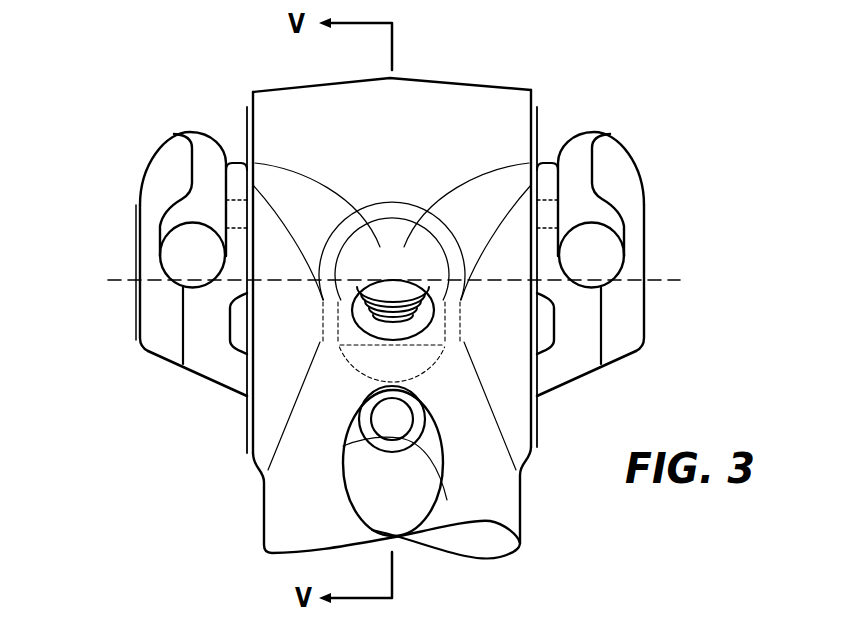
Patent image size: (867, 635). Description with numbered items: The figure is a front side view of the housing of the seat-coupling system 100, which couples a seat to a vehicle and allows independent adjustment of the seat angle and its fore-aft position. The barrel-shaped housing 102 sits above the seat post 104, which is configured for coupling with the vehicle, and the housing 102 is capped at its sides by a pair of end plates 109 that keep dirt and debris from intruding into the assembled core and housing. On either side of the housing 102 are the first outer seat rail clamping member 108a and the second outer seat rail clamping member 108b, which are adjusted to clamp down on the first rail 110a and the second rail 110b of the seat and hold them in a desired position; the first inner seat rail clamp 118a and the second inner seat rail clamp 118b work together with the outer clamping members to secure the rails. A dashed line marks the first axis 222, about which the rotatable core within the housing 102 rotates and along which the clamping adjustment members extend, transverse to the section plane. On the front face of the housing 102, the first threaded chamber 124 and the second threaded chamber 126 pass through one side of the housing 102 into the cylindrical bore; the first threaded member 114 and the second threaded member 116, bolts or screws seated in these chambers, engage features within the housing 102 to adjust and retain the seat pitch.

The system 100 is at (114, 64).
The housing 102 is at (455, 80).
The seat post 104 is at (490, 473).
The first outer seat rail clamping member 108a is at (636, 213).
The second outer seat rail clamping member 108b is at (147, 213).
The end plates 109 is at (247, 127).
The first rail 110a is at (572, 148).
The second rail 110b is at (178, 208).
The first threaded member 114 is at (388, 285).
The second threaded member 116 is at (340, 447).
The first inner seat rail clamp 118a is at (575, 368).
The second inner seat rail clamp 118b is at (205, 365).
The first threaded chamber 124 is at (393, 312).
The second threaded chamber 126 is at (447, 500).
The first axis 222 is at (655, 280).